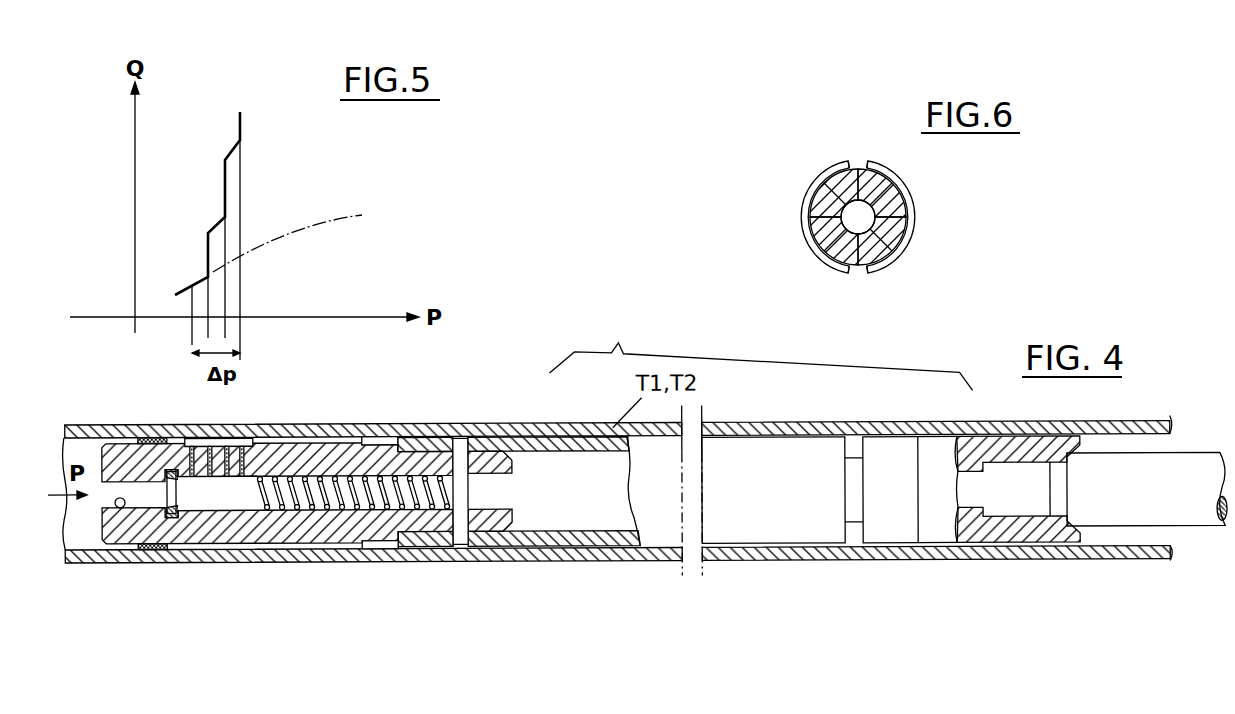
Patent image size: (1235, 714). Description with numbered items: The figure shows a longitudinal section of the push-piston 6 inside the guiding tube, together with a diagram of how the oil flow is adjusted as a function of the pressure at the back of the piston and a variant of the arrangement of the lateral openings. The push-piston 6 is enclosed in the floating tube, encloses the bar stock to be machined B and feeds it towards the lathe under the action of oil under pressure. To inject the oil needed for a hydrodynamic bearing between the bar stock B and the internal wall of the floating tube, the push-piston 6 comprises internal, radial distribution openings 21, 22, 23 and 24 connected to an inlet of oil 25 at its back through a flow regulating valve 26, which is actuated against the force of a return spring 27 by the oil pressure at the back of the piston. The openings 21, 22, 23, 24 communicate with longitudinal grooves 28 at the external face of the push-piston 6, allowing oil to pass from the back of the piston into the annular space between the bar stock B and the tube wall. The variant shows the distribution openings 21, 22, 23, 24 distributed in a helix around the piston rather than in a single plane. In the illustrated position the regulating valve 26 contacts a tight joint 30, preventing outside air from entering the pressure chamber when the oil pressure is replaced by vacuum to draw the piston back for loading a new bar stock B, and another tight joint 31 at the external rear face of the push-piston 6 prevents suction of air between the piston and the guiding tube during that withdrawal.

In FIG. 6, the push-piston 6 is at (828, 268).
In FIG. 4, the push-piston 6 is at (362, 525).
In FIG. 6, the distribution opening 21 is at (897, 178).
In FIG. 4, the distribution opening 21 is at (192, 468).
In FIG. 6, the distribution opening 22 is at (908, 247).
In FIG. 4, the distribution opening 22 is at (210, 468).
In FIG. 6, the distribution opening 23 is at (820, 237).
In FIG. 4, the distribution opening 23 is at (227, 468).
In FIG. 6, the distribution opening 24 is at (808, 197).
In FIG. 4, the distribution opening 24 is at (242, 468).
In FIG. 6, the inlet of oil 25 is at (876, 217).
In FIG. 4, the inlet of oil 25 is at (118, 508).
In FIG. 4, the flow regulating valve 26 is at (222, 500).
In FIG. 4, the return spring 27 is at (290, 513).
In FIG. 6, the longitudinal groove 28 is at (858, 158).
In FIG. 4, the longitudinal groove 28 is at (310, 442).
In FIG. 4, the tight joint 30 is at (169, 516).
In FIG. 4, the tight joint 31 is at (151, 548).
In FIG. 4, the bar stock to be machined B is at (1181, 482).